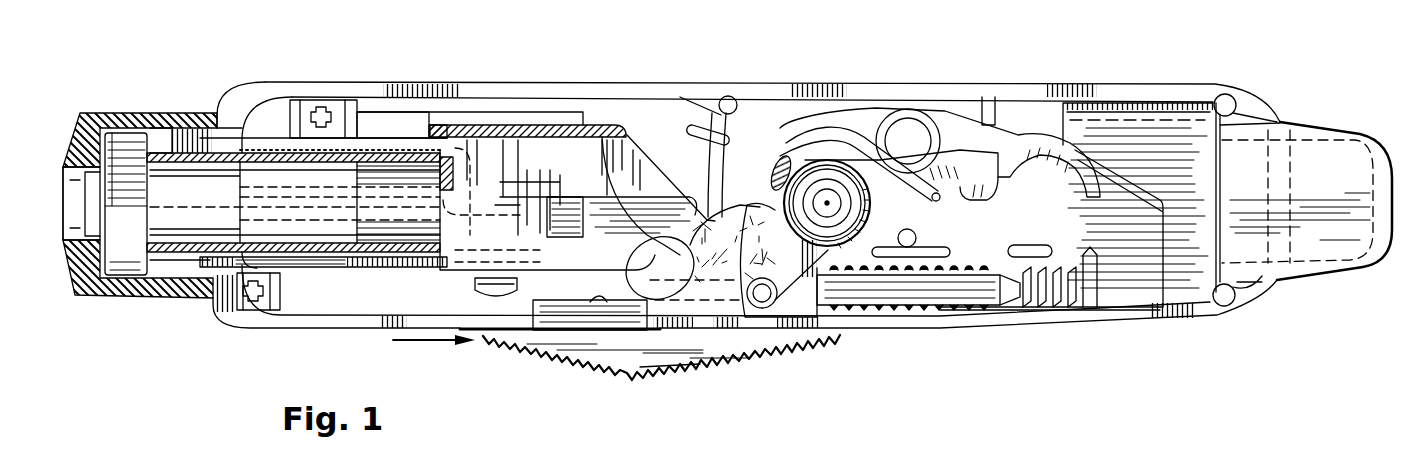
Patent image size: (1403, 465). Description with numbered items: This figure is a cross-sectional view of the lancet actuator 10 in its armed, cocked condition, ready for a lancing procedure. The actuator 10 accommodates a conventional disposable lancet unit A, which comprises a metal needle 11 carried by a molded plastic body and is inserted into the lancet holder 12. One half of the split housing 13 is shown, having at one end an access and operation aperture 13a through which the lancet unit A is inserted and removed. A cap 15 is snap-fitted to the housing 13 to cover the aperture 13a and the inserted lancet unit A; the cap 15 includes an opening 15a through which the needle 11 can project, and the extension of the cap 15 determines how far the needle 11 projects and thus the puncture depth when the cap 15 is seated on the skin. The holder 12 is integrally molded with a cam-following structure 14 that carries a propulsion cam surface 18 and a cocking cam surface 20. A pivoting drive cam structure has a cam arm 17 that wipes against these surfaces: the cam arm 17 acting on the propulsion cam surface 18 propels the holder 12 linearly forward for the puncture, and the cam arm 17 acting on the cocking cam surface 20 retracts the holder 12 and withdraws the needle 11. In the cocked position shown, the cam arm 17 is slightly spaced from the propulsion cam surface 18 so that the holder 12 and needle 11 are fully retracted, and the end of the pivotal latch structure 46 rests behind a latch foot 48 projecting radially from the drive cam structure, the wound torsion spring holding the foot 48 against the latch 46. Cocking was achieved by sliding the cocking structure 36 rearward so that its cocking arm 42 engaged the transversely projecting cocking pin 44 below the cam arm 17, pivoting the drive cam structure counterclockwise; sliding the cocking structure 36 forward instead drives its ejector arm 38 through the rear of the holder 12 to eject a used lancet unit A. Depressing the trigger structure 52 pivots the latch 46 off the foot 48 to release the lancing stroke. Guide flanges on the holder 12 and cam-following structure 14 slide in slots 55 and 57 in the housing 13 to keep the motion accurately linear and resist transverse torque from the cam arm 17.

The lancet actuator 10 is at (987, 335).
The needle 11 is at (128, 195).
The lancet holder 12 is at (317, 259).
The split housing 13 is at (405, 78).
The access and operation aperture 13a is at (142, 157).
The cam-following structure 14 is at (577, 165).
The cap 15 is at (168, 112).
The opening 15a is at (75, 206).
The cam arm 17 is at (668, 370).
The propulsion cam surface 18 is at (651, 246).
The cocking cam surface 20 is at (647, 143).
The cocking structure 36 is at (625, 378).
The ejector arm 38 is at (586, 225).
The cocking arm 42 is at (736, 288).
The cocking pin 44 is at (796, 320).
The latch structure 46 is at (785, 175).
The latch foot 48 is at (775, 148).
The trigger structure 52 is at (1382, 140).
The slot 55 is at (505, 202).
The slot 57 is at (407, 135).
The lancet unit A is at (205, 220).